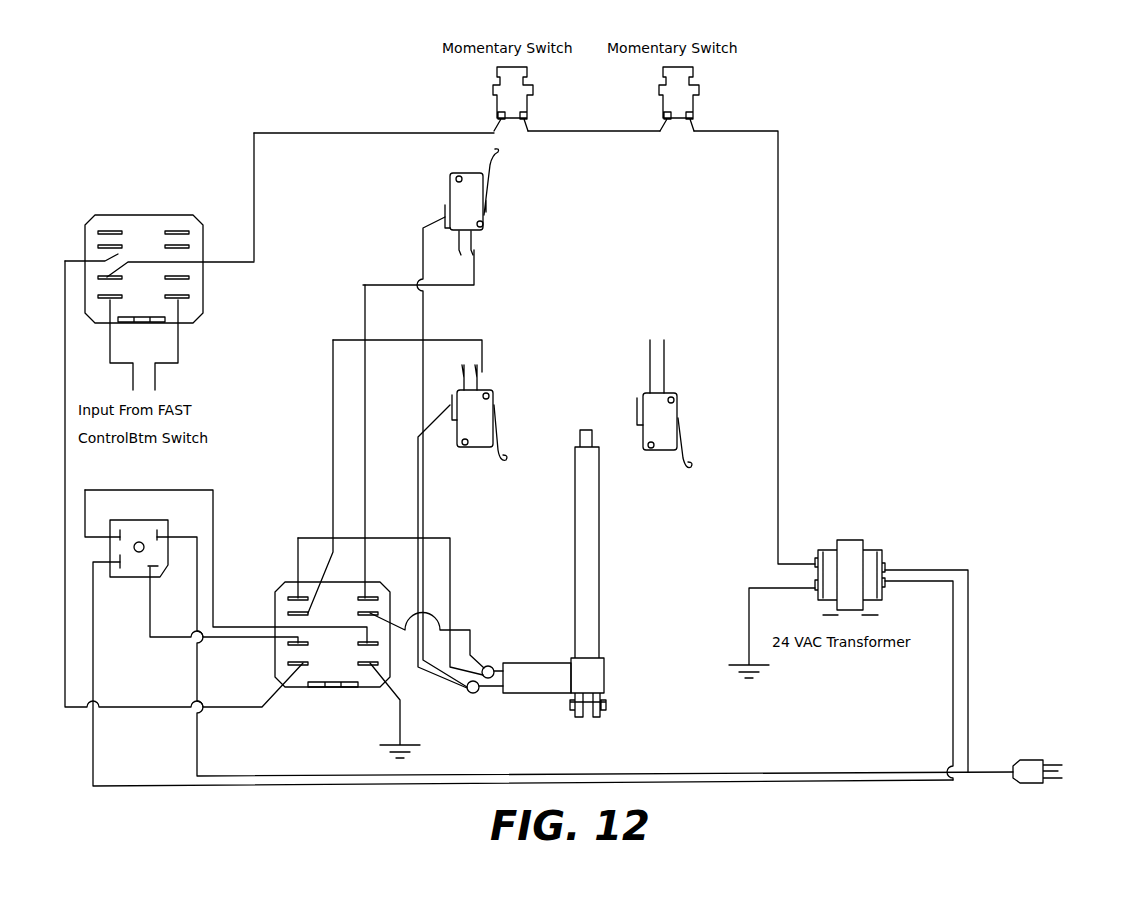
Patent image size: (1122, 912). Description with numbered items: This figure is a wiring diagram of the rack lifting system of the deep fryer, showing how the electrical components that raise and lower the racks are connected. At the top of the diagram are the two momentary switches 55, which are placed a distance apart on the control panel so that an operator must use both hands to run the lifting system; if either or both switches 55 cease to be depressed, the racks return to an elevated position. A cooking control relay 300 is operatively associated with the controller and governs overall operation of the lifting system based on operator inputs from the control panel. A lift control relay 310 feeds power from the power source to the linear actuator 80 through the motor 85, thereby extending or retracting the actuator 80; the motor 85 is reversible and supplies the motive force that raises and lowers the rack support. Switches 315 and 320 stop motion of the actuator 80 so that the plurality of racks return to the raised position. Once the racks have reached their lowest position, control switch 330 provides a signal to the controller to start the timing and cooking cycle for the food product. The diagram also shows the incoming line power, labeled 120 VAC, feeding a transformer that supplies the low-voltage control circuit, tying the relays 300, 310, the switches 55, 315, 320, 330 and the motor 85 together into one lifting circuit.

The cooking control relay 300 is at (142, 215).
The momentary switches 55 is at (660, 108).
The switch 315 is at (490, 195).
The switch 320 is at (498, 425).
The control switch 330 is at (683, 425).
The linear actuator 80 is at (599, 572).
The motor 85 is at (538, 661).
The lift control relay 310 is at (278, 585).
The 120 VAC power plug 120 is at (1054, 774).